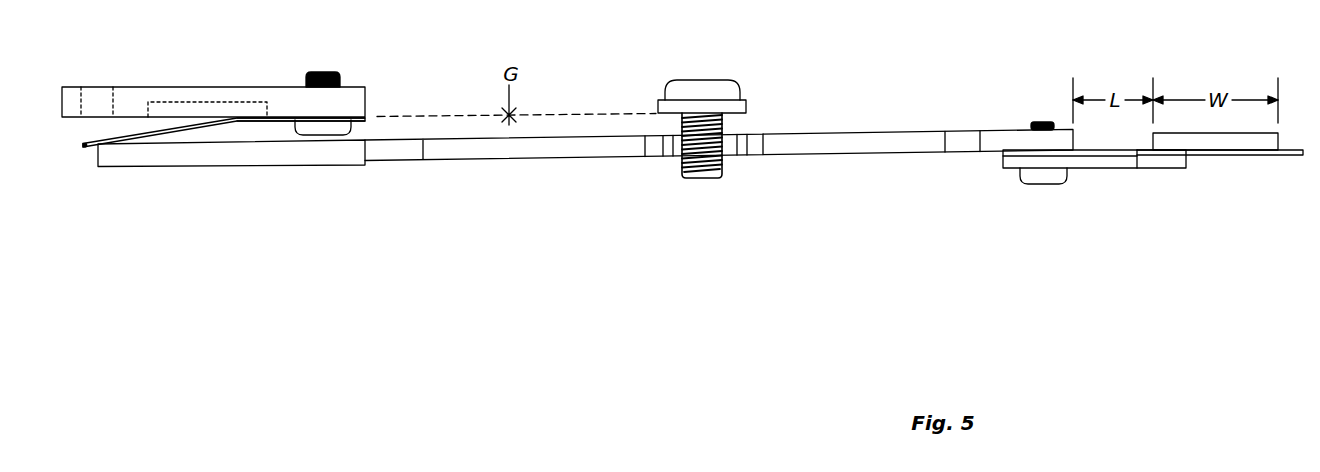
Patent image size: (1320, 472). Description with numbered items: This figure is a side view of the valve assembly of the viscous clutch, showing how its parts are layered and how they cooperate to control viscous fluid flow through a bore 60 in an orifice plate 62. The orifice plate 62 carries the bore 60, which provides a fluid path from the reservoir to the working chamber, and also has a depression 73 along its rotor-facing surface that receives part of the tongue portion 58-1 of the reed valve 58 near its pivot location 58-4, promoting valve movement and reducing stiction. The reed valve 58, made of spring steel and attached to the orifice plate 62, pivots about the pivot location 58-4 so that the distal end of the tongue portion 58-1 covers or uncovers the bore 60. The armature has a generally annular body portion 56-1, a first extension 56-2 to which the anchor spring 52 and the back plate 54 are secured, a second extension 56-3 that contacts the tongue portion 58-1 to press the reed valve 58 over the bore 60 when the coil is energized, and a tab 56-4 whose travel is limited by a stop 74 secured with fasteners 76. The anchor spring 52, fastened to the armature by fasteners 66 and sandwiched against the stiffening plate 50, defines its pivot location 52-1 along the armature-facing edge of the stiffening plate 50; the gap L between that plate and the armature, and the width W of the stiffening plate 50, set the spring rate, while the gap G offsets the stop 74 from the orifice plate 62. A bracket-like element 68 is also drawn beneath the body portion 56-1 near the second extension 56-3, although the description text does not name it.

The stiffening plate 50 is at (1268, 140).
The anchor spring 52 is at (1288, 153).
The pivot location 52-1 is at (1137, 156).
The back plate 54 is at (1108, 162).
The body portion 56-1 is at (812, 143).
The first extension 56-2 is at (998, 130).
The second extension 56-3 is at (280, 153).
The tab 56-4 is at (678, 150).
The reed valve 58 is at (179, 137).
The tongue portion 58-1 is at (90, 152).
The pivot location 58-4 is at (235, 123).
The bore 60 is at (113, 100).
The orifice plate 62 is at (247, 93).
The fasteners 66 is at (1040, 176).
The bracket 68 is at (323, 127).
The depression 73 is at (162, 102).
The stop 74 is at (742, 108).
The fasteners 76 is at (712, 92).